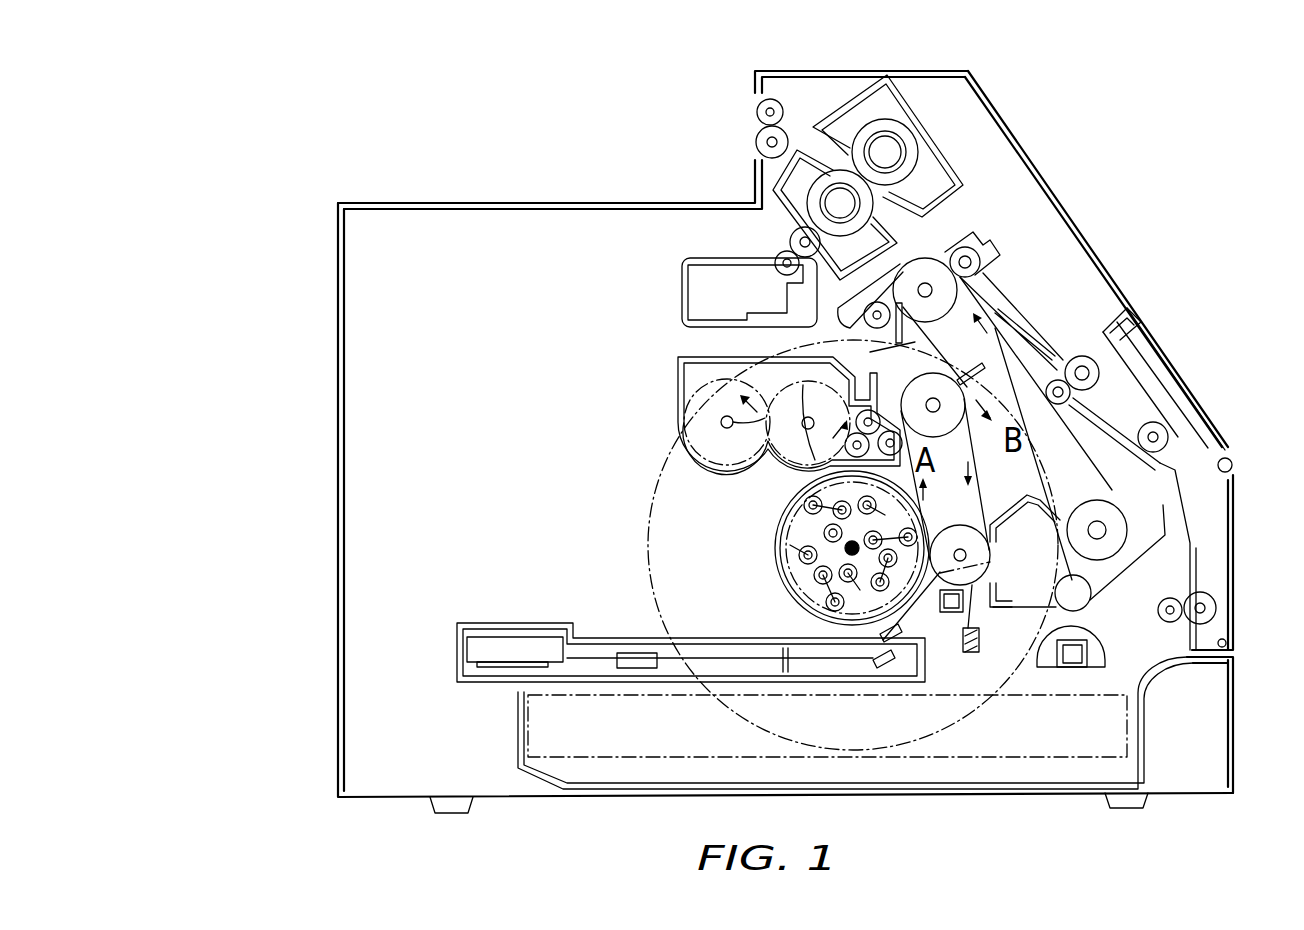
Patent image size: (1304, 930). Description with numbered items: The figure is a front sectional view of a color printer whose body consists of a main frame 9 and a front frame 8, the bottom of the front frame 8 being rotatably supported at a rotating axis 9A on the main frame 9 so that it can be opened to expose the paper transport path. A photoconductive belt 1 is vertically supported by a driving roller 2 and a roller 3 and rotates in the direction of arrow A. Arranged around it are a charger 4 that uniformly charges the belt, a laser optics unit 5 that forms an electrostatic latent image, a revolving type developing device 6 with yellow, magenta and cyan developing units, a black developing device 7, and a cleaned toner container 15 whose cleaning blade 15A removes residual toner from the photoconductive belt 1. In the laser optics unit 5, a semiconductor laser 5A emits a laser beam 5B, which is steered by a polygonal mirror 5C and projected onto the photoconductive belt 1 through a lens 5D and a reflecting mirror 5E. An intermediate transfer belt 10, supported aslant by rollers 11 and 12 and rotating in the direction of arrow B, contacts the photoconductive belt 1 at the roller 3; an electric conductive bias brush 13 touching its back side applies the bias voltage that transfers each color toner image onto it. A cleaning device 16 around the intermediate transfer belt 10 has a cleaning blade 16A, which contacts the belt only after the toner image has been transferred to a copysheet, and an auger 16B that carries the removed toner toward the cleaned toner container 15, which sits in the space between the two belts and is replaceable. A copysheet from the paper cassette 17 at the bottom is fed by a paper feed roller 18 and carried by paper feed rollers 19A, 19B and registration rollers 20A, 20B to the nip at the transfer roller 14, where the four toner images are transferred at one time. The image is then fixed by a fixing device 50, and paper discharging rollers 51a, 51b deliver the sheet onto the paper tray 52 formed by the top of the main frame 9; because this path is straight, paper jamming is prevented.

The photoconductive belt 1 is at (978, 497).
The driving roller 2 is at (952, 526).
The roller 3 is at (934, 425).
The charger 4 is at (955, 612).
The laser optics unit 5 is at (510, 622).
The semiconductor laser 5A is at (477, 650).
The laser beam 5B is at (503, 665).
The polygonal mirror 5C is at (635, 652).
The lens 5D is at (960, 693).
The reflecting mirror 5E is at (888, 673).
The revolving type developing device 6 is at (775, 548).
The black developing device 7 is at (798, 465).
The front frame 8 is at (1083, 222).
The main frame 9 is at (337, 480).
The rotating axis 9A is at (1232, 645).
The intermediate transfer belt 10 is at (1103, 483).
The roller 11 is at (922, 258).
The roller 12 is at (1090, 505).
The electric conductive bias brush 13 is at (970, 378).
The transfer roller 14 is at (978, 262).
The cleaned toner container 15 is at (1018, 607).
The cleaning blade 15A is at (990, 582).
The cleaning device 16 is at (864, 318).
The cleaning blade 16A is at (903, 334).
The auger 16B is at (793, 253).
The paper cassette 17 is at (1145, 793).
The paper feed roller 18 is at (1103, 652).
The paper feed roller 19A is at (1216, 607).
The paper feed roller 19B is at (1158, 612).
The registration roller 20A is at (1118, 333).
The registration roller 20B is at (1060, 357).
The fixing device 50 is at (898, 93).
The paper discharging roller 51a is at (757, 110).
The paper discharging roller 51b is at (756, 145).
The paper tray 52 is at (472, 203).